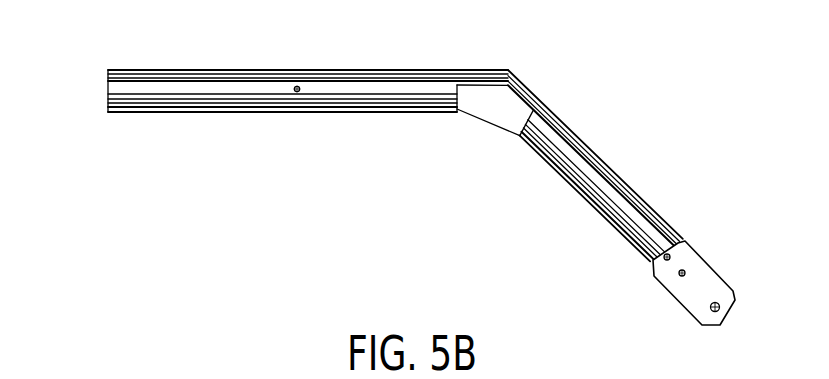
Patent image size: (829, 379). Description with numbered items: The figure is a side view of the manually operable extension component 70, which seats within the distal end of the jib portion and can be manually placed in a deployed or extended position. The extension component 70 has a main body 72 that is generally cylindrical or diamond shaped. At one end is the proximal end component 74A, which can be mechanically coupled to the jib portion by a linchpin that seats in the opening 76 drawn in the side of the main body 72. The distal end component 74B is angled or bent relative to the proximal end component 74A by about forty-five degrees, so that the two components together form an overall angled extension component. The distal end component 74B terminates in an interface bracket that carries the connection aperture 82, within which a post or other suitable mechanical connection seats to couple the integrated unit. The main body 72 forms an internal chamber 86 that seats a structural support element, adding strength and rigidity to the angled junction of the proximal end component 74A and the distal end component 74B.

The extension component 70 is at (655, 133).
The main body 72 is at (172, 69).
The proximal end component 74A is at (108, 74).
The distal end component 74B is at (637, 192).
The opening 76 is at (295, 91).
The connection aperture 82 is at (719, 304).
The internal chamber 86 is at (122, 87).